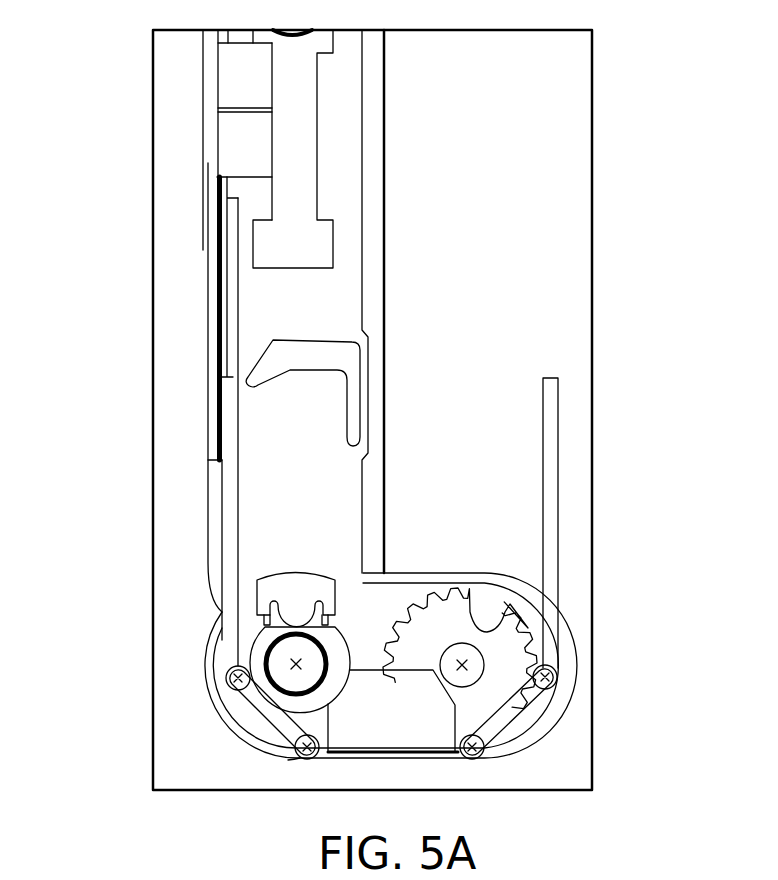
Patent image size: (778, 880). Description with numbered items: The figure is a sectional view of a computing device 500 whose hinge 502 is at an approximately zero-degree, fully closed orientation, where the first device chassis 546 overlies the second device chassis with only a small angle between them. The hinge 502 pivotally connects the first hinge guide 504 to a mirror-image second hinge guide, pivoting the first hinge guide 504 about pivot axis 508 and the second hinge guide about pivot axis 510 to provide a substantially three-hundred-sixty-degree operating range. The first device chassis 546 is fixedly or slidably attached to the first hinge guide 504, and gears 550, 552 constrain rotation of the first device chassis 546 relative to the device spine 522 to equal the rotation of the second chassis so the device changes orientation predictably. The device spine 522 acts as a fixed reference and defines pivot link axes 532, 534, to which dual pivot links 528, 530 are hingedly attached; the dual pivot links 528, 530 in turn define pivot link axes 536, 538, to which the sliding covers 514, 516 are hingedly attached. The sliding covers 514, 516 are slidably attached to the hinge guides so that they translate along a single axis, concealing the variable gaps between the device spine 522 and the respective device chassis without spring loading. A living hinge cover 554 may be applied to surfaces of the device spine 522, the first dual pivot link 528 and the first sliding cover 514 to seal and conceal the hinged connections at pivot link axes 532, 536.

The computing device 500 is at (608, 121).
The hinge 502 is at (607, 662).
The first hinge guide 504 is at (313, 431).
The pivot axis 508 is at (296, 664).
The pivot axis 510 is at (462, 665).
The sliding cover 514 is at (230, 437).
The sliding cover 516 is at (555, 495).
The device spine 522 is at (412, 726).
The dual pivot link 528 is at (275, 712).
The dual pivot link 530 is at (510, 713).
The pivot link axis 532 is at (307, 747).
The pivot link axis 534 is at (472, 747).
The pivot link axis 536 is at (238, 678).
The pivot link axis 538 is at (545, 677).
The first device chassis 546 is at (212, 345).
The gear 550 is at (333, 600).
The gear 552 is at (460, 607).
The living hinge cover 554 is at (288, 760).